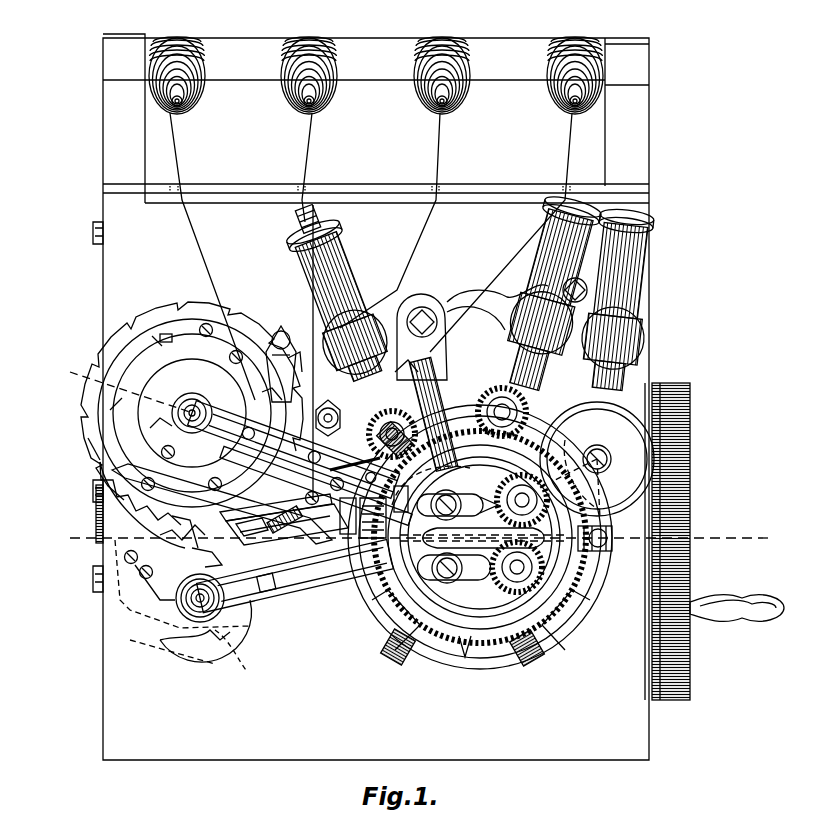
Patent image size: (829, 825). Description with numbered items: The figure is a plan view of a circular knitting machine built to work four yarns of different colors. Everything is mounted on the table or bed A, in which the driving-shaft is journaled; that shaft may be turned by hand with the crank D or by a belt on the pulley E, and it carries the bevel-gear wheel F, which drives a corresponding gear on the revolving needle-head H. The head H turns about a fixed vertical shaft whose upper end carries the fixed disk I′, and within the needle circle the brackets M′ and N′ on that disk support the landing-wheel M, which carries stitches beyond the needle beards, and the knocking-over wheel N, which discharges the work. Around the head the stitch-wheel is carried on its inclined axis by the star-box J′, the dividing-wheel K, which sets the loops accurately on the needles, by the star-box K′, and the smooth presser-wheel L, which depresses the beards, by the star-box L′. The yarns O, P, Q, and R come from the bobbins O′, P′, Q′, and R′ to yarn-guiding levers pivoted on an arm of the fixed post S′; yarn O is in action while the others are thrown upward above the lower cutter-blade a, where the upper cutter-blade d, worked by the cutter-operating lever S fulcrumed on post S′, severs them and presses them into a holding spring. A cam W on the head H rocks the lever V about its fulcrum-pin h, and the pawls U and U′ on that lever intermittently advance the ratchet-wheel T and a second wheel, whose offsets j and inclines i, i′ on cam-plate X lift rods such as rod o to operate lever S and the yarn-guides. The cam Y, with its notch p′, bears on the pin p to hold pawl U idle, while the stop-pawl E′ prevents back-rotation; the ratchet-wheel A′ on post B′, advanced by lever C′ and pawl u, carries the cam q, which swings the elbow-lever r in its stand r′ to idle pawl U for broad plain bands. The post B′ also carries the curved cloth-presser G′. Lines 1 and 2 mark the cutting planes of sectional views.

The table or bed A is at (371, 397).
The bobbin R′ is at (177, 63).
The bobbin Q′ is at (309, 63).
The bobbin P′ is at (442, 63).
The bobbin O′ is at (575, 62).
The yarn R is at (212, 256).
The yarn Q is at (315, 167).
The yarn P is at (391, 220).
The yarn O is at (503, 232).
The star-box J′ is at (336, 291).
The star-box K′ is at (549, 293).
The star-box L′ is at (617, 299).
The upper cutter-blade d is at (432, 414).
The fulcrum-pin h is at (328, 412).
The dividing-wheel K is at (495, 405).
The lower cutter-blade a is at (405, 434).
The segmental cam-plate X is at (192, 417).
The cam Y is at (82, 431).
The notch p′ is at (142, 505).
The pin p is at (183, 532).
The post S′ is at (186, 406).
The section line 2 is at (121, 386).
The cutter-operating lever S is at (294, 450).
The ratchet-wheel T is at (218, 499).
The stop-pawl E′ is at (279, 360).
The circular stock or head H is at (480, 537).
The landing-wheel M is at (521, 498).
The knocking-over wheel N is at (512, 598).
The bracket or stand M′ is at (457, 510).
The bracket or stand N′ is at (453, 576).
The fixed disk or plate I′ is at (482, 540).
The curved cloth-presser or push-back G′ is at (336, 533).
The post B′ is at (200, 598).
The cam q is at (205, 635).
The ratchet-wheel A′ is at (160, 606).
The bevel-gear wheel F is at (146, 576).
The lever C′ is at (180, 540).
The pawl u is at (207, 551).
The pawl U is at (287, 528).
The pawl U′ is at (276, 504).
The lever V is at (373, 518).
The block V′ is at (363, 516).
The elbow-lever r is at (252, 527).
The stand r′ is at (284, 520).
The presser-wheel L is at (597, 460).
The cam W is at (595, 553).
The pulley E is at (667, 541).
The crank D is at (536, 484).
The section line 1 is at (414, 537).
The incline i is at (172, 444).
The incline i′ is at (246, 361).
The offset j is at (161, 420).
The rod o is at (207, 338).